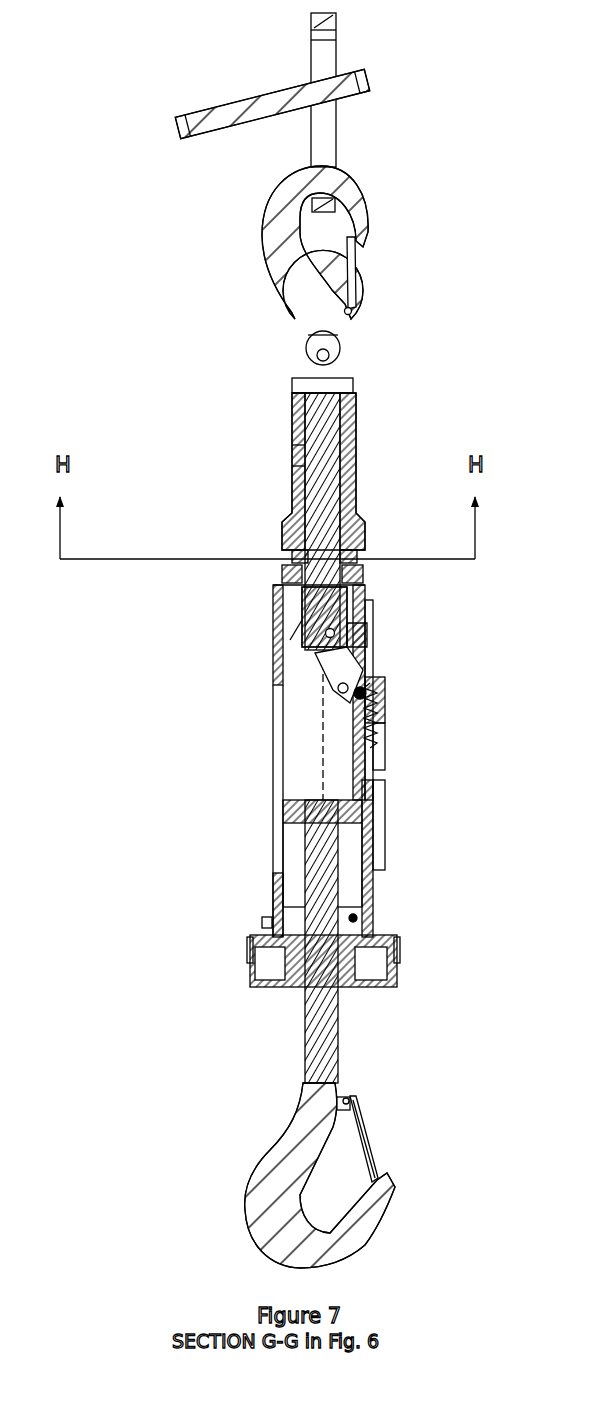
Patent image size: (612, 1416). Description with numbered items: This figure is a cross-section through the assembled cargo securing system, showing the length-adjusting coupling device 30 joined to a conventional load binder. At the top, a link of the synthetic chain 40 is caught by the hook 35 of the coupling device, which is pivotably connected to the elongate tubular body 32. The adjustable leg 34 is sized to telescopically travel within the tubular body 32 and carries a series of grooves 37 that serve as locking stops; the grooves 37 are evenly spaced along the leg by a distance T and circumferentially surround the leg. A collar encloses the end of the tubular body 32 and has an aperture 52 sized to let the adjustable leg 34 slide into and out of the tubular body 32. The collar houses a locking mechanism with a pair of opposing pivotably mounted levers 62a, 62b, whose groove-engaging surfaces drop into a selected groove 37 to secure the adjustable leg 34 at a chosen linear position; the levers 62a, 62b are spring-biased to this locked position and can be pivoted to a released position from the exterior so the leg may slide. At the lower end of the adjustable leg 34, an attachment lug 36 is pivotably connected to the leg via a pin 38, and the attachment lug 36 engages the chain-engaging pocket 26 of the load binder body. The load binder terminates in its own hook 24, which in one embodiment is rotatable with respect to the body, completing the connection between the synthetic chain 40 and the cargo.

The hook 24 is at (271, 1188).
The chain-engaging pocket 26 is at (355, 624).
The length-adjusting coupling device 30 is at (161, 384).
The elongate tubular body 32 is at (293, 436).
The adjustable leg 34 is at (312, 598).
The hook 35 is at (285, 205).
The attachment lug 36 is at (370, 645).
The grooves 37 is at (293, 466).
The pin 38 is at (332, 636).
The synthetic chain 40 is at (233, 64).
The aperture 52 is at (350, 436).
The lever 62a is at (290, 570).
The lever 62b is at (360, 550).